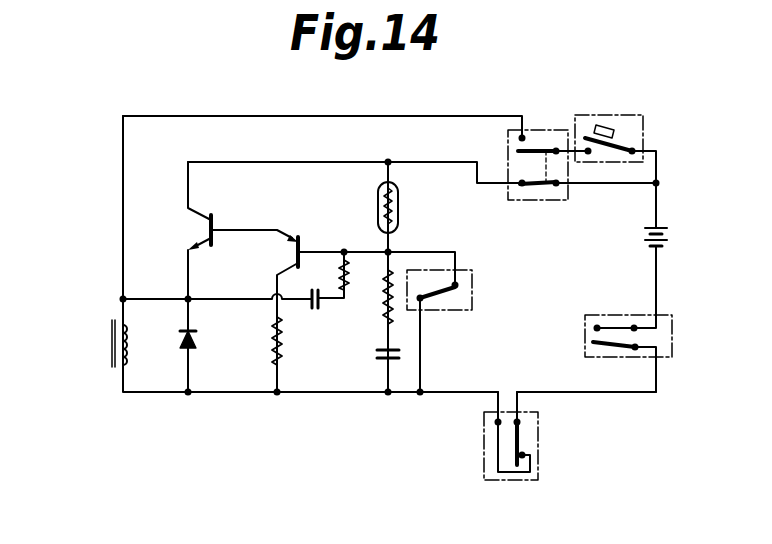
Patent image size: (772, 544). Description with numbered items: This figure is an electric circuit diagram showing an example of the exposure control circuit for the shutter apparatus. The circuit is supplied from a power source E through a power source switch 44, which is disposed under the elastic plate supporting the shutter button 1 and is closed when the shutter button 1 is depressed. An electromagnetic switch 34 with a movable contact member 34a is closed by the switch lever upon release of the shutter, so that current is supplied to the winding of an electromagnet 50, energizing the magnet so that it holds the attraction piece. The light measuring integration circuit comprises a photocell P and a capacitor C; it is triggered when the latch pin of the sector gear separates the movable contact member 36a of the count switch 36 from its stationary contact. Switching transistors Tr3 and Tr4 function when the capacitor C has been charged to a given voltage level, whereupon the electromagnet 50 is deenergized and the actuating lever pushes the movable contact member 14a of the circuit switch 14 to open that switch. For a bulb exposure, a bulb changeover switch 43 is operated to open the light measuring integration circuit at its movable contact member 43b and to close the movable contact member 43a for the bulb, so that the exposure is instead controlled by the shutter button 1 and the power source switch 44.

The shutter button 1 is at (603, 128).
The circuit switch 14 is at (511, 446).
The movable contact member of the circuit switch 14a is at (522, 440).
The electromagnetic switch 34 is at (628, 332).
The movable contact member of the electromagnetic switch 34a is at (610, 347).
The count switch 36 is at (460, 303).
The movable contact member of the count switch 36a is at (441, 302).
The bulb changeover switch 43 is at (518, 168).
The movable contact member for the bulb 43a is at (540, 145).
The movable contact member of the light measuring integration circuit 43b is at (539, 191).
The power source switch 44 is at (632, 127).
The electromagnet 50 is at (110, 347).
The switching transistor Tr3 is at (299, 244).
The switching transistor Tr4 is at (212, 221).
The photocell P is at (377, 207).
The capacitor C is at (382, 357).
The power source E is at (668, 238).